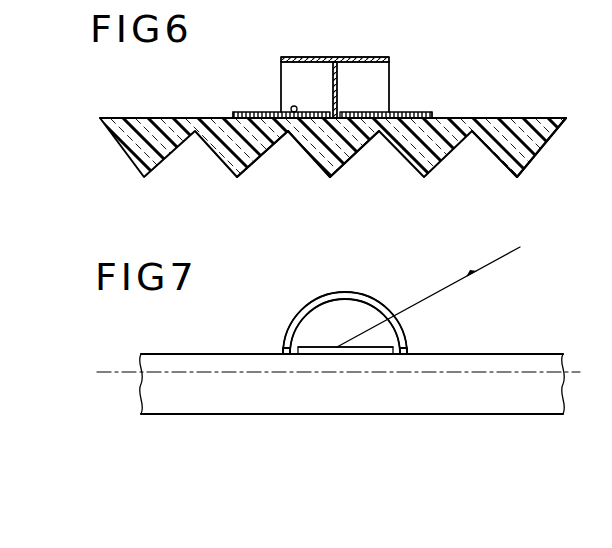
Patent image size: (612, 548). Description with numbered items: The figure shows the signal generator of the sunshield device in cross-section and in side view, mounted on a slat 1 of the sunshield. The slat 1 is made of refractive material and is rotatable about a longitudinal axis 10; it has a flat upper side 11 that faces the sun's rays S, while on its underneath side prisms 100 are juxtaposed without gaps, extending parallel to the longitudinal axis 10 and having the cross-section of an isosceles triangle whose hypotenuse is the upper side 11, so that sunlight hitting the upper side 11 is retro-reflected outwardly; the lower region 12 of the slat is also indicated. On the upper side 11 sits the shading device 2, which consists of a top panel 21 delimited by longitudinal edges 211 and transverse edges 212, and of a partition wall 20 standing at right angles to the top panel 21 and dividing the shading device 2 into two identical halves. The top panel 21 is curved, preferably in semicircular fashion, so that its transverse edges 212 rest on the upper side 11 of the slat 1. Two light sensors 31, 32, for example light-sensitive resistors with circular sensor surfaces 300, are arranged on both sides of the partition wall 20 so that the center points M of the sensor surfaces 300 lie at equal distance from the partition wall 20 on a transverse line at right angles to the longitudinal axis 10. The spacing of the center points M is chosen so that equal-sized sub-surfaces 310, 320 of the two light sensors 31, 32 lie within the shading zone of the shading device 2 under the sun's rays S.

In FIG. 6, the slat 1 is at (203, 166).
In FIG. 7, the slat 1 is at (243, 418).
In FIG. 6, the longitudinal axis 10 is at (327, 138).
In FIG. 7, the longitudinal axis 10 is at (105, 373).
In FIG. 6, the upper side 11 is at (489, 117).
In FIG. 7, the upper side 11 is at (494, 352).
In FIG. 6, the bottom surface / tooth flank 12 is at (387, 147).
In FIG. 7, the bottom surface / tooth flank 12 is at (515, 416).
In FIG. 6, the prisms 100 is at (488, 150).
In FIG. 6, the shading device 2 is at (337, 55).
In FIG. 7, the shading device 2 is at (332, 288).
In FIG. 6, the partition wall 20 is at (333, 72).
In FIG. 7, the partition wall 20 is at (327, 322).
In FIG. 6, the top panel 21 is at (346, 57).
In FIG. 7, the top panel 21 is at (377, 300).
In FIG. 6, the longitudinal edges 211 is at (281, 65).
In FIG. 7, the transverse edges 212 is at (282, 352).
In FIG. 6, the sensor surfaces 300 is at (250, 111).
In FIG. 7, the sensor surfaces 300 is at (337, 347).
In FIG. 6, the sub-surface 310 is at (357, 110).
In FIG. 6, the light sensor 31 is at (433, 115).
In FIG. 6, the light sensor 32 is at (233, 114).
In FIG. 7, the light sensor 32 is at (327, 347).
In FIG. 6, the sub-surface 320 is at (288, 122).
In FIG. 6, the center points M is at (280, 111).
In FIG. 7, the sun's rays S is at (502, 258).